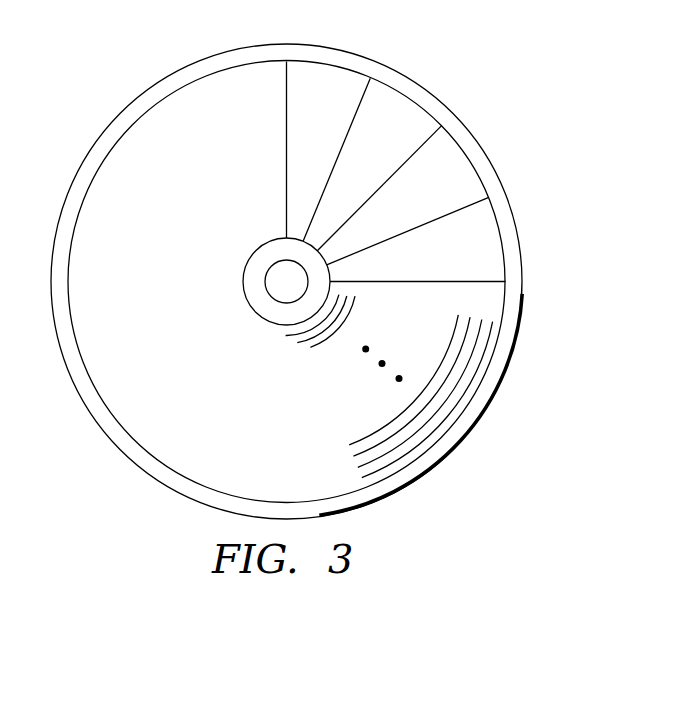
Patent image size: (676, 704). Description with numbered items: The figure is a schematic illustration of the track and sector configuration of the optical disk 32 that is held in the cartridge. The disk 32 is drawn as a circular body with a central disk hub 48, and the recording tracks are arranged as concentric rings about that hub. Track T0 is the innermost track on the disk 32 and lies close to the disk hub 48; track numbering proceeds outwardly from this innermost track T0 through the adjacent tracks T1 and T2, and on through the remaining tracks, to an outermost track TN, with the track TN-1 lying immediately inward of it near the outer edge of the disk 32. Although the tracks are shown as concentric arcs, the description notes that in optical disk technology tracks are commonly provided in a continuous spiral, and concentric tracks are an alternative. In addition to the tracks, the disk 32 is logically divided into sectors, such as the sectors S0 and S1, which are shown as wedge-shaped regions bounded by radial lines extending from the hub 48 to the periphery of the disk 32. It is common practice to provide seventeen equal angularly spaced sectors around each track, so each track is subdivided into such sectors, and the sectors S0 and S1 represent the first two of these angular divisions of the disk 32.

The optical disk 32 is at (103, 388).
The disk hub 48 is at (260, 257).
The sector S0 is at (320, 70).
The sector S1 is at (393, 100).
The track T0 is at (283, 338).
The track T1 is at (300, 348).
The track T2 is at (358, 297).
The outermost track TN is at (507, 299).
The track TN-1 is at (488, 337).